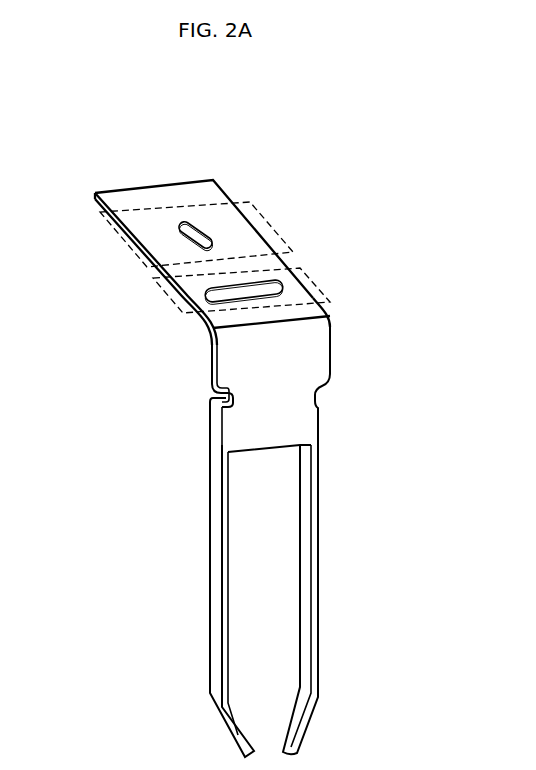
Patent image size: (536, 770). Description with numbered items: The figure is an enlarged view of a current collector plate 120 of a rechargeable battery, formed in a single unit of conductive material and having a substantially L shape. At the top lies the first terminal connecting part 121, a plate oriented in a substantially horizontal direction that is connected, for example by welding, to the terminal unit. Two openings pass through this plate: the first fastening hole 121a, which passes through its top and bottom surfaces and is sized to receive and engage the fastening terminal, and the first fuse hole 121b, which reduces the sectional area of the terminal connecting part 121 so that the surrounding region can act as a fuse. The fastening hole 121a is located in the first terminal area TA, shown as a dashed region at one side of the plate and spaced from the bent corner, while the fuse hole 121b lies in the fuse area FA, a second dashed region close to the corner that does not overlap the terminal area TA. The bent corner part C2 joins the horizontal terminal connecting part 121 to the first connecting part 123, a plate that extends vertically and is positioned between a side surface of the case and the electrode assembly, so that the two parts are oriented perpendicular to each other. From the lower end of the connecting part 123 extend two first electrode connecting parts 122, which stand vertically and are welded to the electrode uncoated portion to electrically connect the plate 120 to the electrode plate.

The first current collector plate 120 is at (442, 164).
The first terminal connecting part 121 is at (203, 190).
The first fastening hole 121a is at (180, 227).
The first fuse hole 121b is at (260, 285).
The first terminal area TA is at (113, 238).
The fuse area FA is at (318, 274).
The second corner part C2 is at (330, 316).
The first connecting part 123 is at (292, 393).
The first electrode connecting part 122 is at (224, 629).